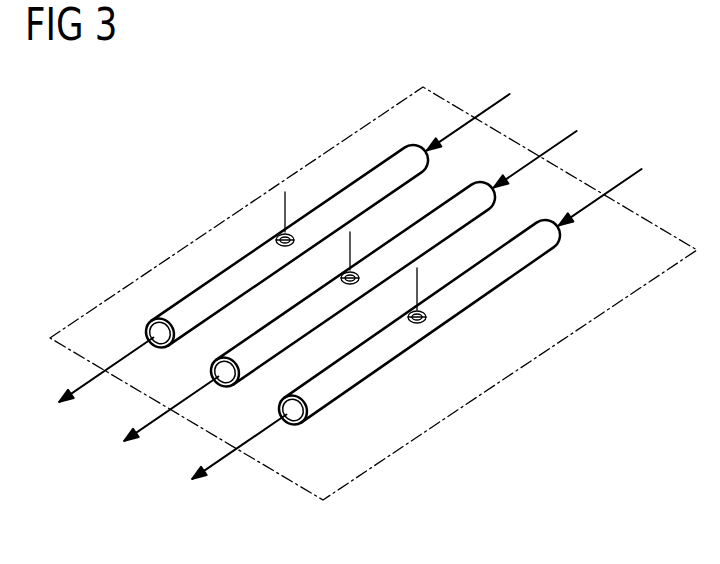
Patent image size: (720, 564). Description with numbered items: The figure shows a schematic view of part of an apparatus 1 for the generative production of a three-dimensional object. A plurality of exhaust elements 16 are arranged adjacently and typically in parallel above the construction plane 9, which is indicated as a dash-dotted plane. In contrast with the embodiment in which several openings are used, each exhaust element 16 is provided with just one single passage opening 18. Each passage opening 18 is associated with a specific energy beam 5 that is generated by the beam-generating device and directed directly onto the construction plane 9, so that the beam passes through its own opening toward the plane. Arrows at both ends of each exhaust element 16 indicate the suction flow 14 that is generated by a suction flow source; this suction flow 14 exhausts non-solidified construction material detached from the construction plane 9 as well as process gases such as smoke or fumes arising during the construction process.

The apparatus 1 is at (248, 91).
The energy beam 5 is at (285, 200).
The construction plane 9 is at (570, 308).
The suction flow 14 is at (503, 97).
The exhaust element 16 is at (348, 197).
The passage opening 18 is at (283, 232).